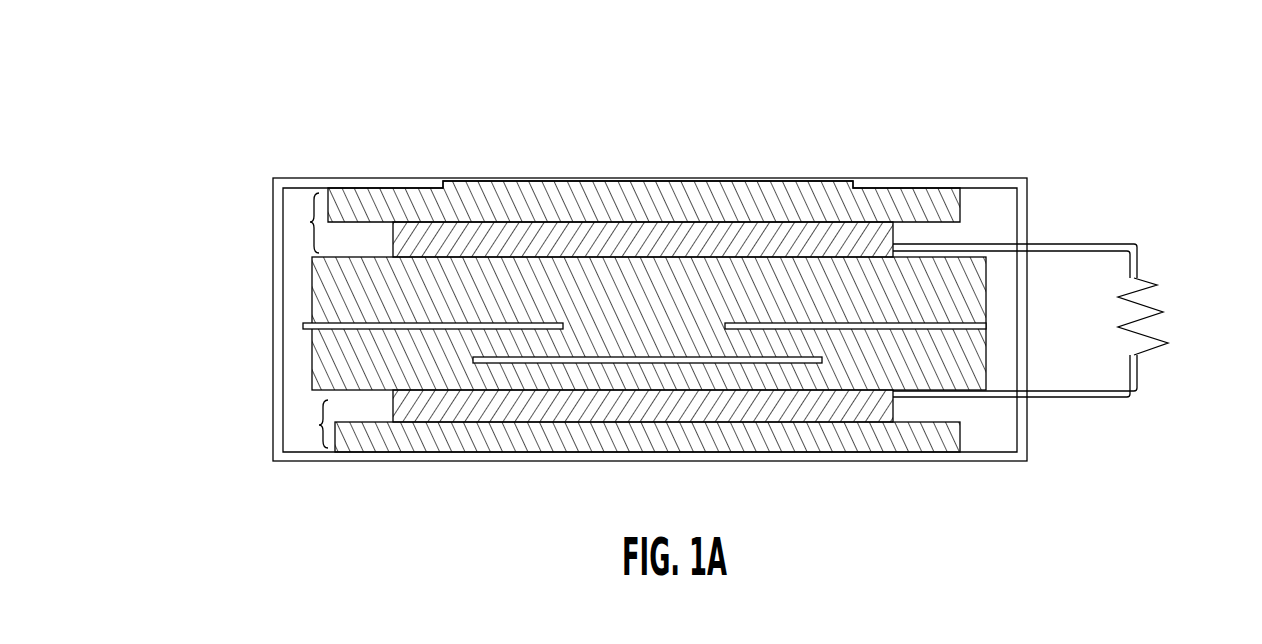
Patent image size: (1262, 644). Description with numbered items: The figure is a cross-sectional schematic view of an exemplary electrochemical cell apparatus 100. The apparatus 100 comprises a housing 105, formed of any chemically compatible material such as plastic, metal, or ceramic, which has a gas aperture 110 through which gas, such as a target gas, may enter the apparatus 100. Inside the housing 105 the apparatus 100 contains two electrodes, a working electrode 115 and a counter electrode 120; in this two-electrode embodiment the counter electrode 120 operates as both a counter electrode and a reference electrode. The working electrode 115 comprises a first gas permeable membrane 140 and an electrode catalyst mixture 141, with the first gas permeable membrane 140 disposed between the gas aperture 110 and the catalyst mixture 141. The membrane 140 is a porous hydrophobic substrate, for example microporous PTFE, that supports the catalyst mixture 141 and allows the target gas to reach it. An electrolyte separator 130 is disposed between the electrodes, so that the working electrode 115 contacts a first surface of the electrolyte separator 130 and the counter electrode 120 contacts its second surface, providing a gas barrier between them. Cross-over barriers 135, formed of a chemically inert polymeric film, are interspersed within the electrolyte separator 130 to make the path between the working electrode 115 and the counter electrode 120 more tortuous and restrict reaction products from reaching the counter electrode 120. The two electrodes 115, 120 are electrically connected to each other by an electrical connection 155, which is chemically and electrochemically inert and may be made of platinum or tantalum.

The electrochemical cell apparatus 100 is at (296, 118).
The housing 105 is at (273, 327).
The gas aperture 110 is at (577, 152).
The working electrode 115 is at (310, 223).
The counter electrode 120 is at (319, 425).
The electrolyte separator 130 is at (822, 374).
The cross-over barriers 135 is at (517, 320).
The first gas permeable membrane 140 is at (926, 196).
The electrode catalyst mixture 141 is at (893, 228).
The electrical connection 155 is at (1163, 313).